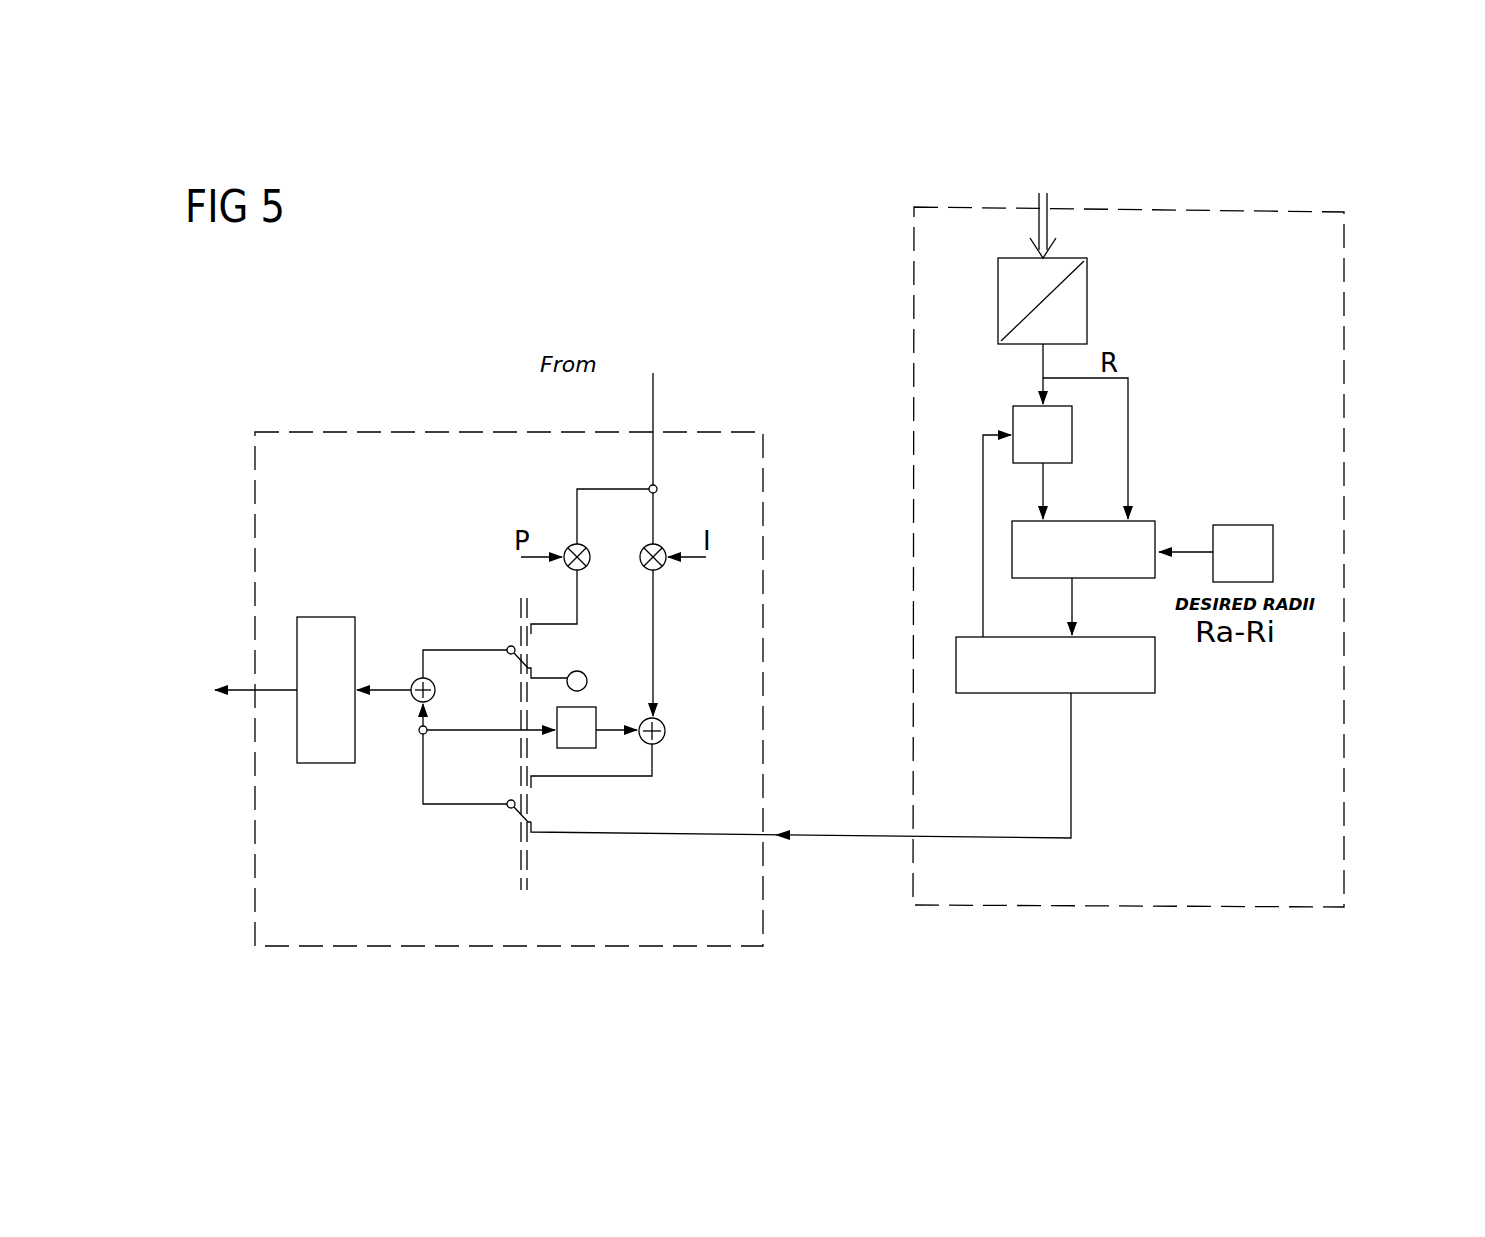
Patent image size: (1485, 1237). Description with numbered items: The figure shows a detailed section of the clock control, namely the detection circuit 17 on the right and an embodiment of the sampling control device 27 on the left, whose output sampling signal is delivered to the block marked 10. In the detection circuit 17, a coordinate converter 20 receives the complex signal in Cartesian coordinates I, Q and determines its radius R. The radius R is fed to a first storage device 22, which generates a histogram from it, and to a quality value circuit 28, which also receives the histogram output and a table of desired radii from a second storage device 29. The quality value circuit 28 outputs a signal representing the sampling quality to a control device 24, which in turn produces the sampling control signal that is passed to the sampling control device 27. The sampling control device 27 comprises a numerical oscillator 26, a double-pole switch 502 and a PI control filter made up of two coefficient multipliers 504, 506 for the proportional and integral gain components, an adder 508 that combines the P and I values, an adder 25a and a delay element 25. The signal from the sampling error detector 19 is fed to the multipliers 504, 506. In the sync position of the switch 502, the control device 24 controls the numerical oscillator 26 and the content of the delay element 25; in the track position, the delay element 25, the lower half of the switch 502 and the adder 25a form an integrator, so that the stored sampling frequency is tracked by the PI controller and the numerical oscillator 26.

The output to memory / channel decoder 10 is at (223, 708).
The detection circuit 17 is at (1344, 825).
The sampling error detector 19 is at (657, 433).
The coordinate converter 20 is at (998, 284).
The first storage device 22 is at (1013, 418).
The control device 24 is at (1155, 672).
The delay element 25 is at (585, 748).
The adder 25a is at (660, 745).
The numerical oscillator 26 is at (337, 753).
The sampling control device 27 is at (760, 946).
The quality value circuit 28 is at (1222, 492).
The second storage device 29 is at (1273, 536).
The double-pole switch 502 is at (500, 792).
The coefficient multiplier 504 is at (586, 548).
The coefficient multiplier 506 is at (660, 547).
The adder 508 is at (418, 680).